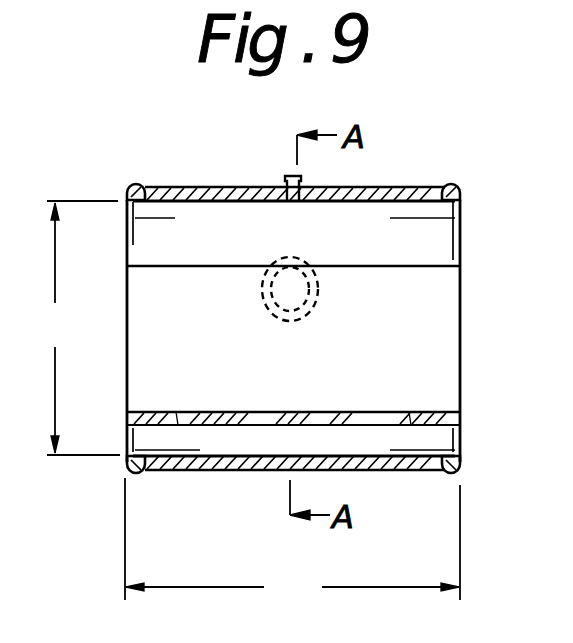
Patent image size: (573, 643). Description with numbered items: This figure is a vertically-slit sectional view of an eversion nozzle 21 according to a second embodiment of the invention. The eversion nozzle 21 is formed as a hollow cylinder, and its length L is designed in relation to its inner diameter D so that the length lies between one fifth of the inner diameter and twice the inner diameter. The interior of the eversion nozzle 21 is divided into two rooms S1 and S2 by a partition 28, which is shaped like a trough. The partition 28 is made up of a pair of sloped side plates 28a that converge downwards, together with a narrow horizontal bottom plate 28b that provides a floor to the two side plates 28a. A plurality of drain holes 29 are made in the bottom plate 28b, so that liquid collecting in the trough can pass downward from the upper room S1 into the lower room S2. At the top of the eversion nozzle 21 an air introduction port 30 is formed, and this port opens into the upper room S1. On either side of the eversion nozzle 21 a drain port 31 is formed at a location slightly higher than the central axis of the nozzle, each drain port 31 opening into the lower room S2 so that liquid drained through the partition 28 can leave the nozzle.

The eversion nozzle 21 is at (413, 188).
The partition 28 is at (450, 388).
The sloped side plates 28a is at (233, 322).
The bottom plate 28b is at (363, 414).
The drain holes 29 is at (178, 411).
The air introduction port 30 is at (285, 183).
The drain port 31 is at (306, 304).
The room S1 is at (445, 288).
The room S2 is at (228, 446).
The inner diameter D is at (81, 328).
The length L is at (292, 540).